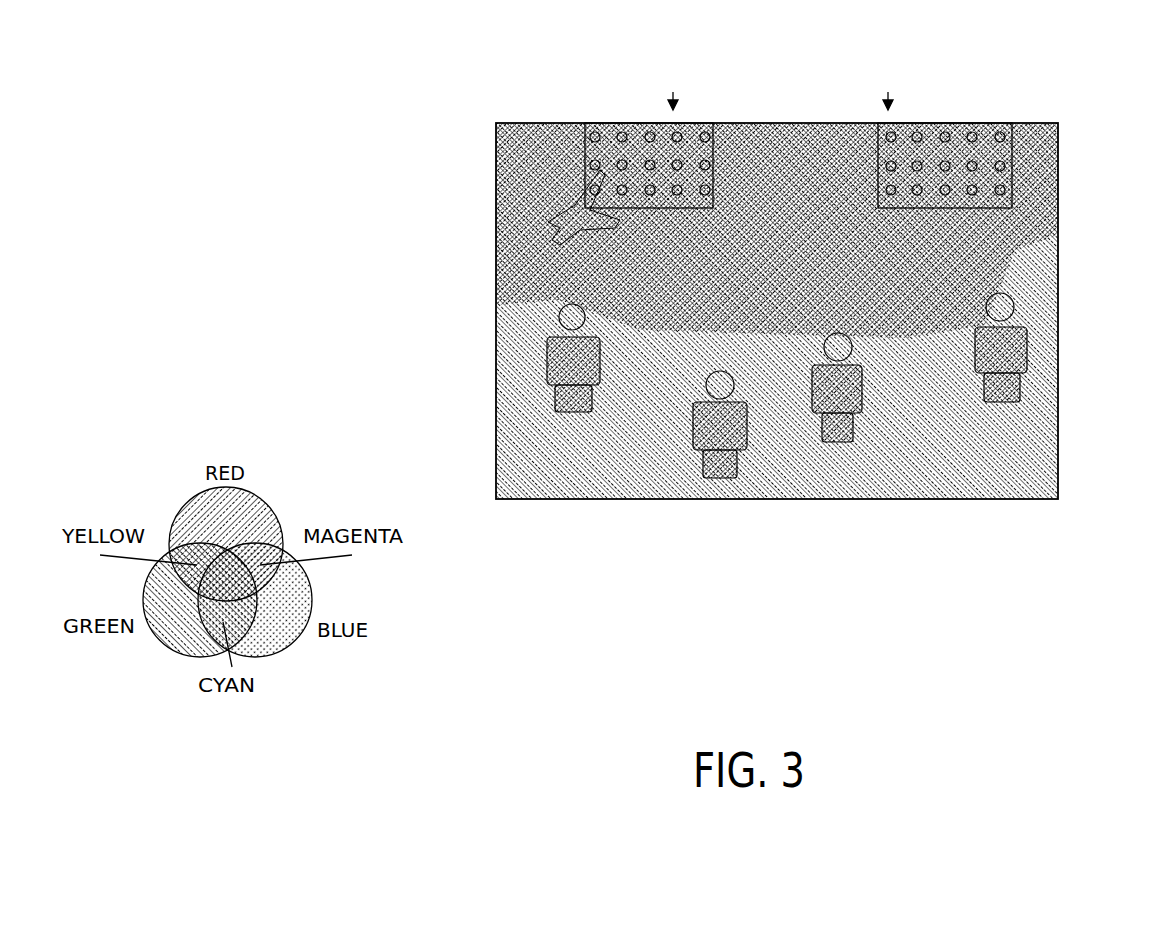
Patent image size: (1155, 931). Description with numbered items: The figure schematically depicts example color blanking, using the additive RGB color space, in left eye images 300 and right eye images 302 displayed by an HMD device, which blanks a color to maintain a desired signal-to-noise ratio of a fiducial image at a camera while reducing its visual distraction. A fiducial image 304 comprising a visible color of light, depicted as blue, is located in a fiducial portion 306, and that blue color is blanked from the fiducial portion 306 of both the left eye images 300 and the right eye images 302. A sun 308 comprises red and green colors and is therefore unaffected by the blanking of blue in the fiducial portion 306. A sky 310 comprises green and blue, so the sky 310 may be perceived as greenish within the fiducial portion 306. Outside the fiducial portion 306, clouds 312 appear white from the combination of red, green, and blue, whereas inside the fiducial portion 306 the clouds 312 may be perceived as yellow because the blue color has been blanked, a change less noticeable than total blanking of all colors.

The left eye images 300 is at (495, 447).
The right eye images 302 is at (1058, 272).
The fiducial image 304 is at (781, 83).
The fiducial portion 306 is at (605, 127).
The sun 308 is at (548, 218).
The sky 310 is at (533, 282).
The clouds 312 is at (823, 178).